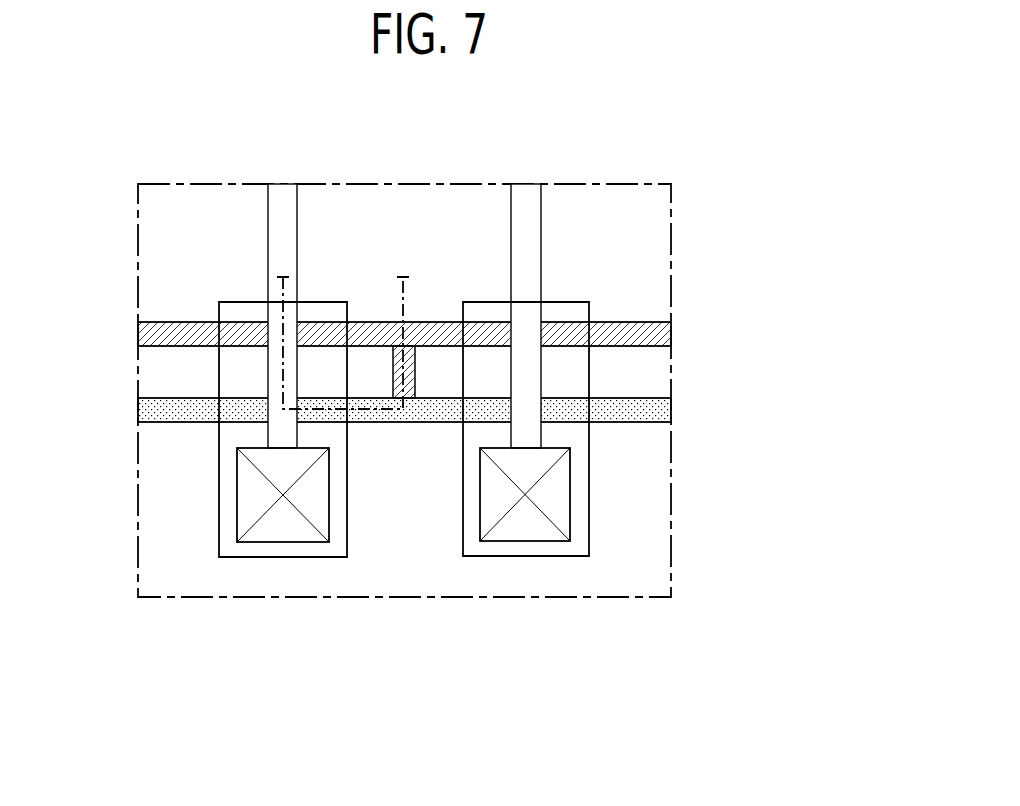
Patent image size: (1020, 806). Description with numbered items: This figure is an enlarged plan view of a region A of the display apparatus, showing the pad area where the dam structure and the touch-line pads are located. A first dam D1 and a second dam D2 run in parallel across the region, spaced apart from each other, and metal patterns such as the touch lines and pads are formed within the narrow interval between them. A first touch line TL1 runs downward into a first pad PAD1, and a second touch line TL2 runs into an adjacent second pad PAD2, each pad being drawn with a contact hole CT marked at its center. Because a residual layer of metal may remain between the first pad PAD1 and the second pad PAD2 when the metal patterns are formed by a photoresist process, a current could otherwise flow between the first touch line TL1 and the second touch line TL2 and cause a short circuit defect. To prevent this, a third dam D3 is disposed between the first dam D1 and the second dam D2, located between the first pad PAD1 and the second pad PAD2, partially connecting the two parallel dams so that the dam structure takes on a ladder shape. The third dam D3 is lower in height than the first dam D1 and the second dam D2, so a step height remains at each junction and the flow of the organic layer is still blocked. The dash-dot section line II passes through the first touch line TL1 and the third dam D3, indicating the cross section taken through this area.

The region A is at (70, 139).
The first touch line TL1 is at (278, 203).
The second touch line TL2 is at (521, 203).
The first dam D1 is at (158, 332).
The second dam D2 is at (158, 409).
The third dam D3 is at (413, 343).
The first pad PAD1 is at (335, 557).
The second pad PAD2 is at (578, 556).
The contact hole CT is at (283, 495).
The section line II-II' II is at (345, 330).